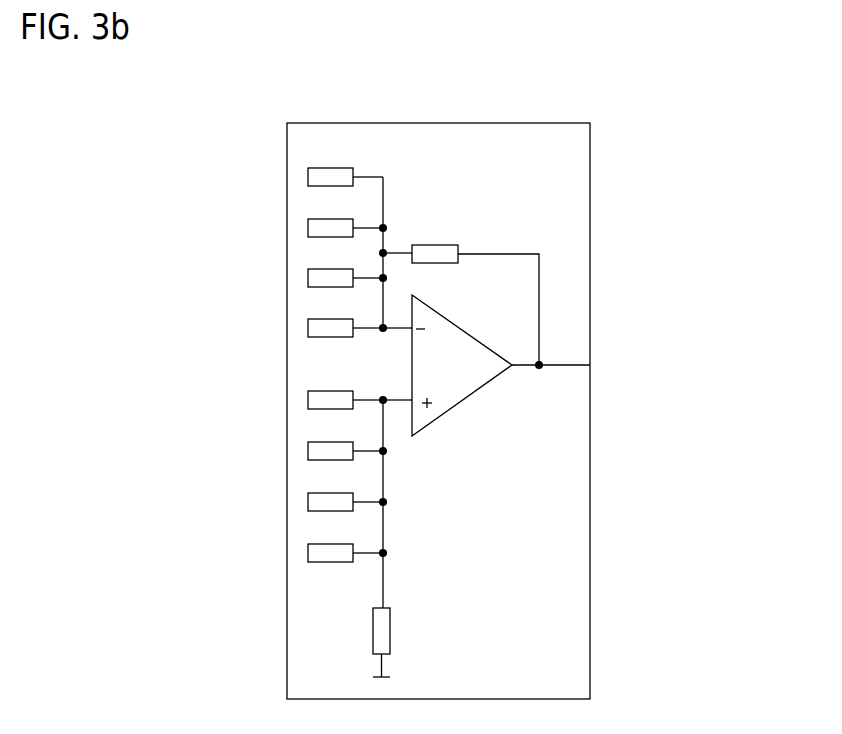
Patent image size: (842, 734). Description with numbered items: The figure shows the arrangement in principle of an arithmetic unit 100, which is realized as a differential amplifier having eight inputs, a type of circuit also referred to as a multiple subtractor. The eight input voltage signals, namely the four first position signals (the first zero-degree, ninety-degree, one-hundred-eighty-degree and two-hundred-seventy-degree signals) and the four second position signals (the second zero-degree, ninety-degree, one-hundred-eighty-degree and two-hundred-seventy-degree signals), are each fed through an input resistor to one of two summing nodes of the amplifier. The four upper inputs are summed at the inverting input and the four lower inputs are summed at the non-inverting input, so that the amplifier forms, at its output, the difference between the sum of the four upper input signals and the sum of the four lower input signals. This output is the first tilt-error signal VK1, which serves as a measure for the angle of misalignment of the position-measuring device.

The arithmetic unit 100 is at (405, 158).
The first tilt-error signal VK1 is at (590, 365).